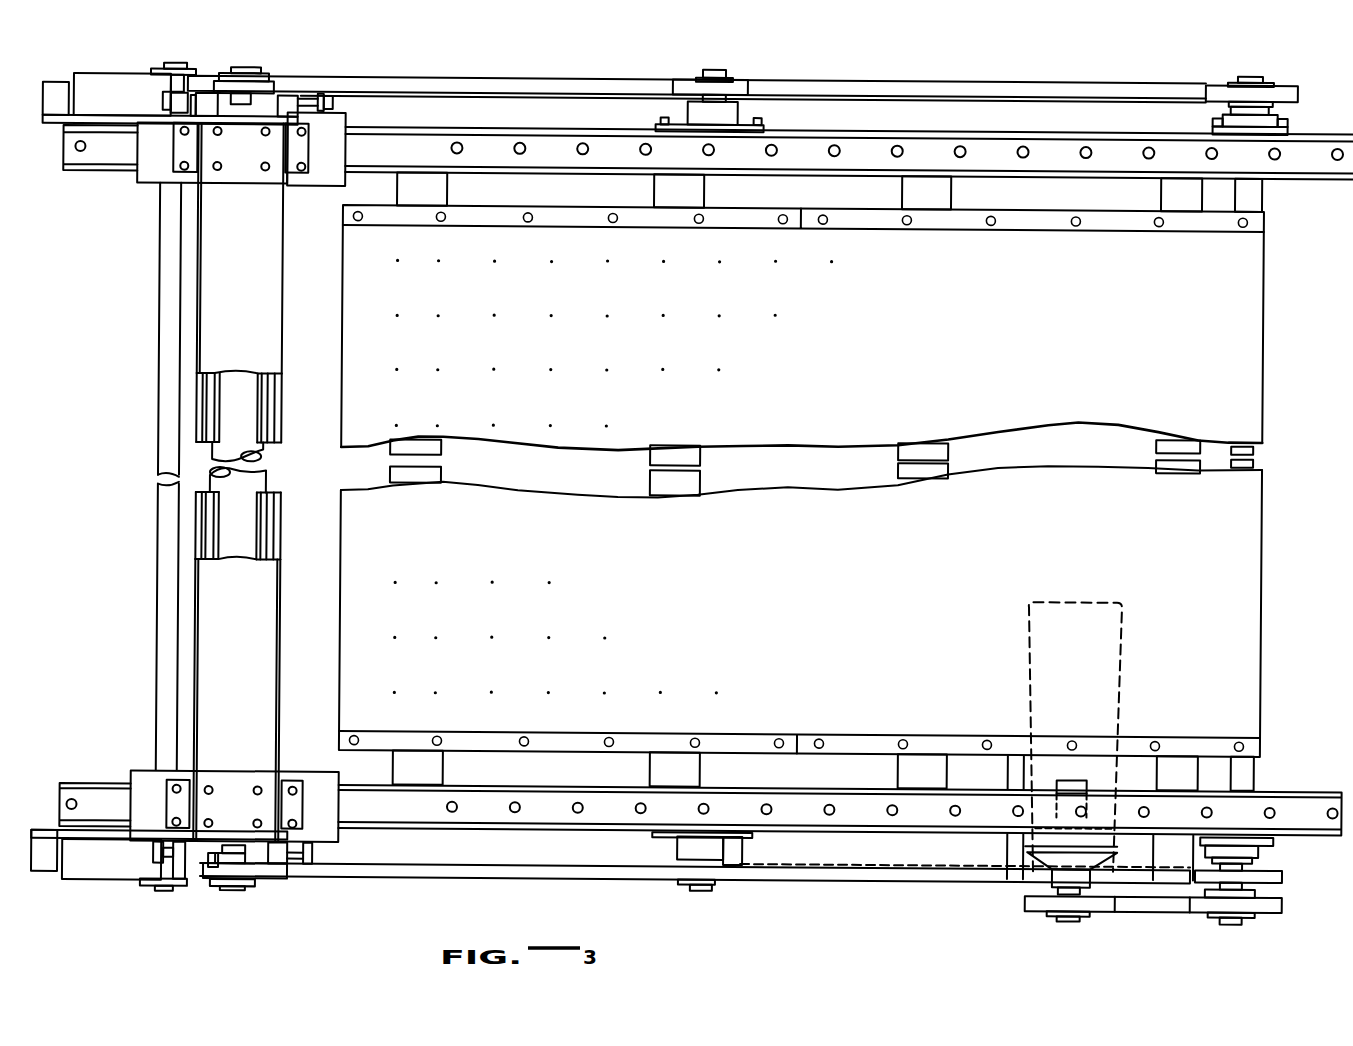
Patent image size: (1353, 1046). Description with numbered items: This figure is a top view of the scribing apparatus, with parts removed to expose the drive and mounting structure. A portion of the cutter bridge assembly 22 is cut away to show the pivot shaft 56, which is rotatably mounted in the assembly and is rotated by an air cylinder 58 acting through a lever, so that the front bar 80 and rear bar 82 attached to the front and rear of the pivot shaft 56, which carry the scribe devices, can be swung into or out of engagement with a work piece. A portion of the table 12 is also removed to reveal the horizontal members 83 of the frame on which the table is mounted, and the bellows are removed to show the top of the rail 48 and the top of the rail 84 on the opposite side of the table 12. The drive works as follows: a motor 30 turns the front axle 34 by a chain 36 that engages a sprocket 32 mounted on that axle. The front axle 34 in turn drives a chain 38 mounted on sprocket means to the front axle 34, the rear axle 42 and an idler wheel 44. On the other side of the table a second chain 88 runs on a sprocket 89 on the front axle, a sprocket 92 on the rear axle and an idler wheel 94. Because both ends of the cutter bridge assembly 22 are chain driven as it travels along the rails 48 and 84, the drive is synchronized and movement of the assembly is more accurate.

The table 12 is at (1240, 384).
The cutter bridge assembly 22 is at (201, 476).
The motor 30 is at (1113, 687).
The sprocket 32 is at (1296, 885).
The front axle 34 is at (1242, 774).
The chain 36 is at (1158, 902).
The chain 38 is at (877, 874).
The rear axle 42 is at (167, 714).
The idler wheel 44 is at (727, 875).
The rail 48 is at (1304, 803).
The pivot shaft 56 is at (230, 406).
The air cylinder 58 is at (125, 868).
The front bar 80 is at (274, 417).
The rear bar 82 is at (207, 531).
The horizontal members 83 is at (913, 467).
The rail 84 is at (1304, 143).
The second chain 88 is at (948, 86).
The sprocket 89 is at (1296, 80).
The sprocket 92 is at (157, 74).
The idler wheel 94 is at (700, 77).